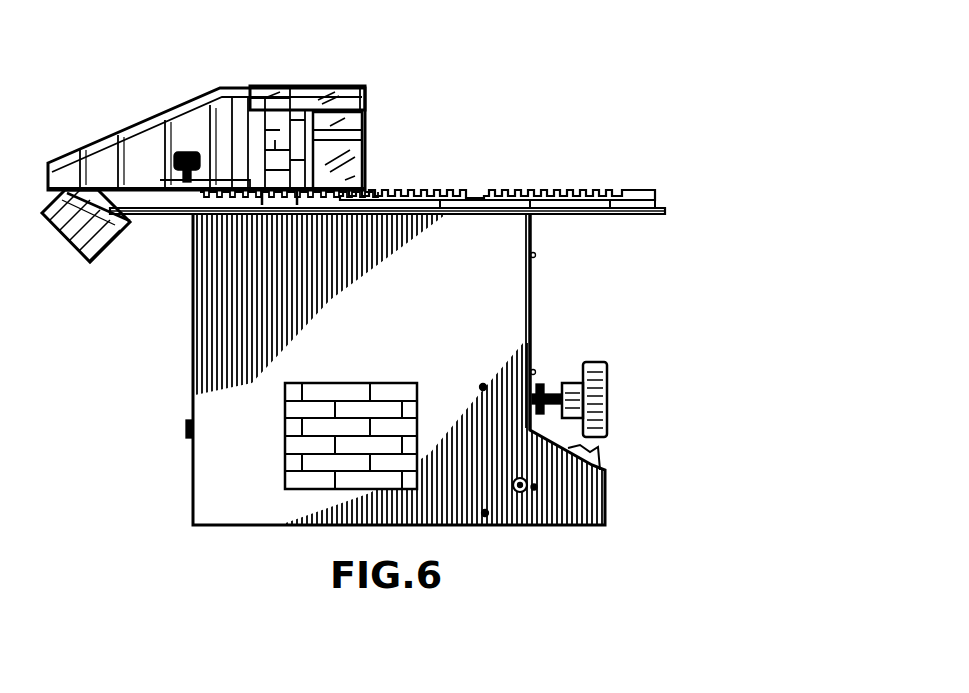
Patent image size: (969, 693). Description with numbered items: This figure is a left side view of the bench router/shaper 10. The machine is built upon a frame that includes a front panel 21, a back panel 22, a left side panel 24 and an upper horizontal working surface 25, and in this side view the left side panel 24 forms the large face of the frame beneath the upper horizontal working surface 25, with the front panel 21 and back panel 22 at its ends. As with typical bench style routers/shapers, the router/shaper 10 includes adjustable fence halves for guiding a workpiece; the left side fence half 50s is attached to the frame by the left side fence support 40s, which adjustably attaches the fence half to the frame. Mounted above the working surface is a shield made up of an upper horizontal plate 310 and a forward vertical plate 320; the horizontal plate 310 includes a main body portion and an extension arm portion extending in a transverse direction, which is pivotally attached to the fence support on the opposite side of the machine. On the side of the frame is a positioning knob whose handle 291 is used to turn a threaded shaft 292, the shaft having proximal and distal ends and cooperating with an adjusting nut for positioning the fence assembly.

The router/shaper 10 is at (578, 90).
The front panel 21 is at (533, 268).
The back panel 22 is at (193, 381).
The left side panel 24 is at (237, 453).
The upper horizontal working surface 25 is at (558, 190).
The left side fence support 40s is at (262, 193).
The left side fence half 50s is at (297, 193).
The handle 291 is at (607, 404).
The threaded shaft 292 is at (553, 395).
The upper horizontal plate 310 is at (305, 85).
The forward vertical plate 320 is at (365, 148).